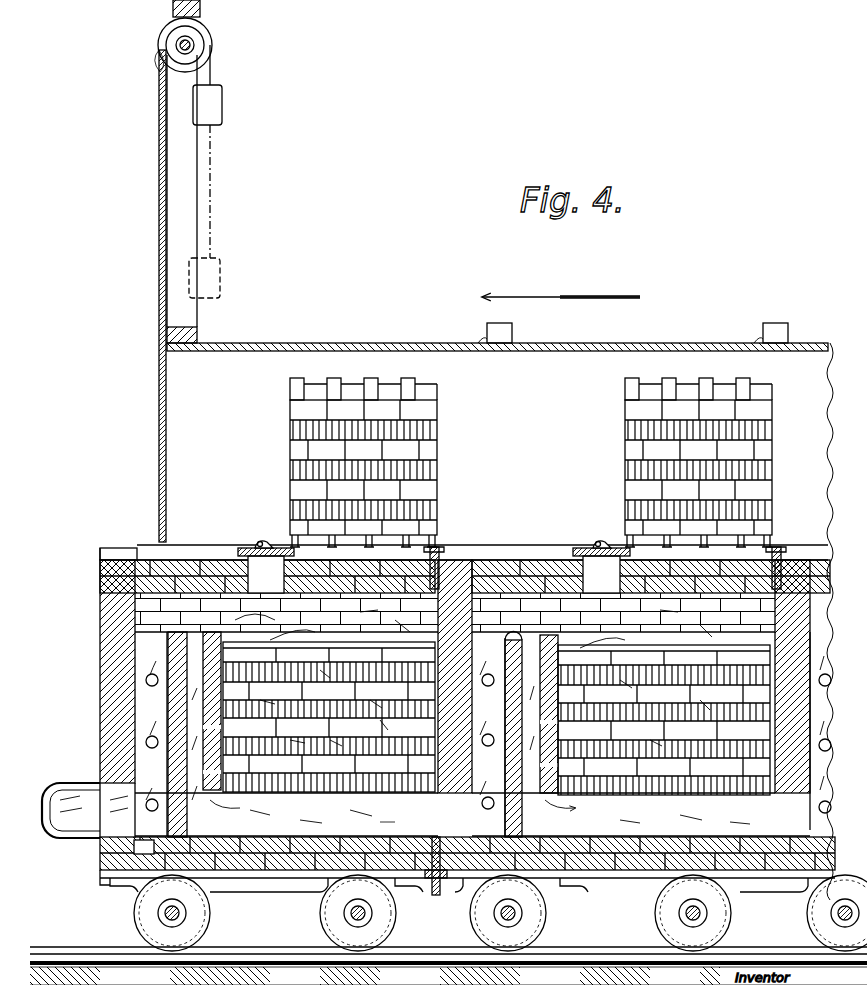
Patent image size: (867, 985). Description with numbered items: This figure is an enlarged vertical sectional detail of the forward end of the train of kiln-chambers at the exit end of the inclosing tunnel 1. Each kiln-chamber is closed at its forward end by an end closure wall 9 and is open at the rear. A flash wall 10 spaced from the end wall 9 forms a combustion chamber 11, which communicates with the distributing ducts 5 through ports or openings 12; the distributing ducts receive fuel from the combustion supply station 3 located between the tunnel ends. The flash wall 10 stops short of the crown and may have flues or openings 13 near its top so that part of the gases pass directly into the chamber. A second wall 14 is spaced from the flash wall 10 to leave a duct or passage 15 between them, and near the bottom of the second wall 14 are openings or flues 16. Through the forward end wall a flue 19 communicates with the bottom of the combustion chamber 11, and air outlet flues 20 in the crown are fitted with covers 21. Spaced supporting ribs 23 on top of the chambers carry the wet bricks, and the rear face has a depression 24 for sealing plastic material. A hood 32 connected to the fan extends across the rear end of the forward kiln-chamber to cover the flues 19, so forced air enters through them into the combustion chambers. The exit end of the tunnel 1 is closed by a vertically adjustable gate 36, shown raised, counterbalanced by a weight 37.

The inclosing tunnel 1 is at (696, 349).
The combustion supply station 3 is at (286, 880).
The distributing ducts 5 is at (142, 868).
The end closure wall 9 is at (110, 655).
The flash wall 10 is at (175, 821).
The combustion chamber 11 is at (145, 700).
The ports or openings 12 is at (178, 802).
The flues or openings 13 is at (510, 652).
The second wall 14 is at (235, 648).
The duct or passage 15 is at (200, 730).
The openings or flues 16 is at (547, 780).
The flue 19 is at (440, 822).
The air outlet flues 20 is at (270, 598).
The closures or covers 21 is at (268, 540).
The supporting ribs 23 is at (441, 548).
The depression 24 is at (365, 549).
The hood 32 is at (80, 847).
The closure or gate 36 is at (159, 273).
The counterbalancing weight 37 is at (223, 104).